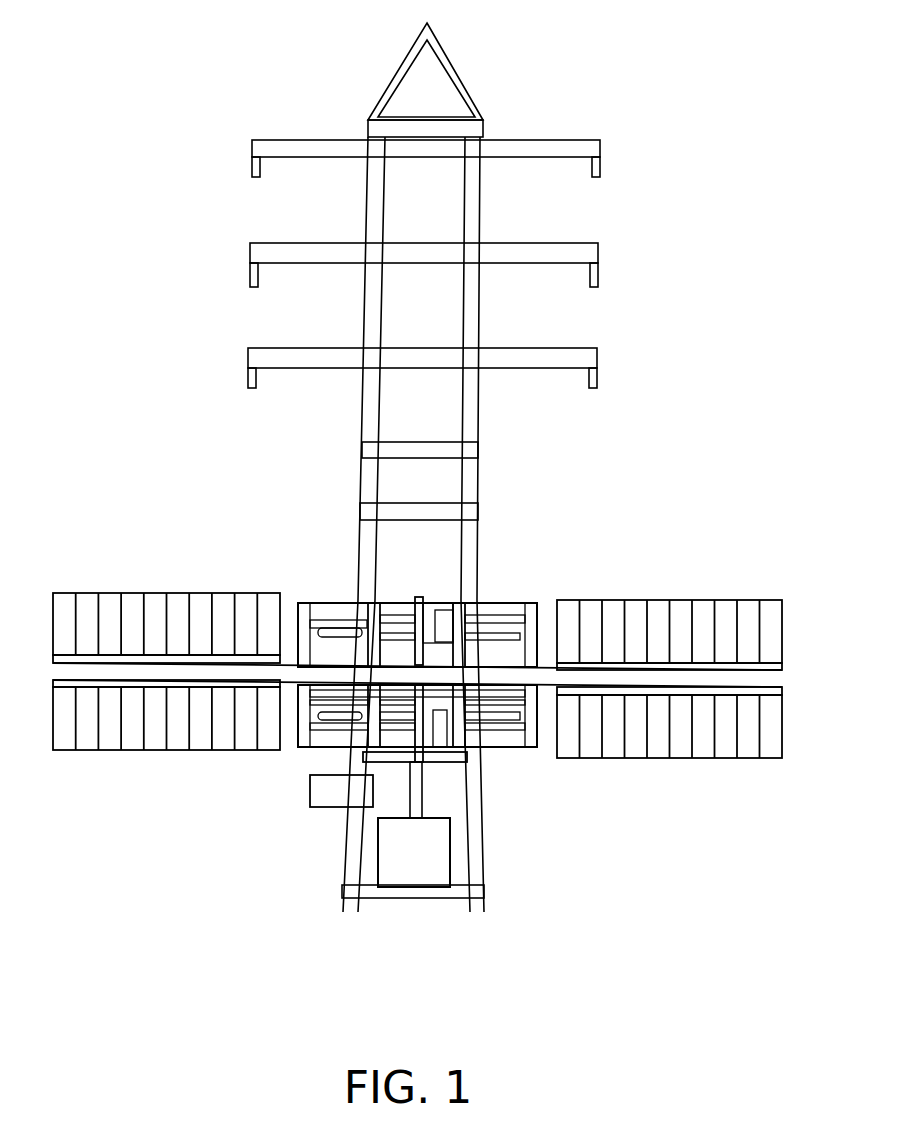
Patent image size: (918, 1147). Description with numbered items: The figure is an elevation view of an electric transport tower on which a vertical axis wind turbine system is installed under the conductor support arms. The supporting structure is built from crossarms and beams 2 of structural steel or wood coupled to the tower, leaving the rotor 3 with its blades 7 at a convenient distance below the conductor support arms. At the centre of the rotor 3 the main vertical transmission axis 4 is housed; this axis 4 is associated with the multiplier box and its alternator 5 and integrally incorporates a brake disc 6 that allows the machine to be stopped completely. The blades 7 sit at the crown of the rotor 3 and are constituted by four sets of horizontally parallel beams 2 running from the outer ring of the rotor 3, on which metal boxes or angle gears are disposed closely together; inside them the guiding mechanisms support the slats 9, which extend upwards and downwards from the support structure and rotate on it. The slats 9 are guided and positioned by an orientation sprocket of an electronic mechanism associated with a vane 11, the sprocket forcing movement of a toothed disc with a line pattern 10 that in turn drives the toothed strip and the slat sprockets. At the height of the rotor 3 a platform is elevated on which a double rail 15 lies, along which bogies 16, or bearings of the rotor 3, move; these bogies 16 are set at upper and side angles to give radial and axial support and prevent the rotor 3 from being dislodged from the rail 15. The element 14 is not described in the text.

The beams 2 is at (227, 672).
The rotor 3 is at (308, 625).
The main vertical transmission axis 4 is at (410, 788).
The alternator 5 is at (417, 857).
The brake disc 6 is at (450, 760).
The blades 7 is at (107, 670).
The slats 9 is at (750, 623).
The line pattern 10 is at (355, 685).
The vane 11 is at (325, 790).
The left upper blades 14 is at (90, 652).
The double rail 15 is at (500, 640).
The bogies 16 is at (452, 615).